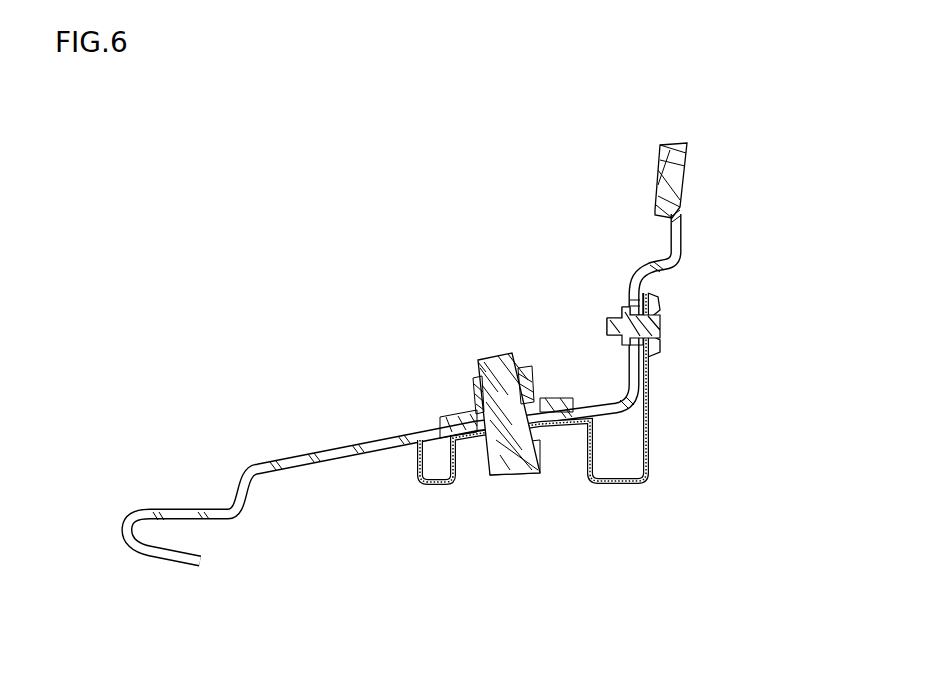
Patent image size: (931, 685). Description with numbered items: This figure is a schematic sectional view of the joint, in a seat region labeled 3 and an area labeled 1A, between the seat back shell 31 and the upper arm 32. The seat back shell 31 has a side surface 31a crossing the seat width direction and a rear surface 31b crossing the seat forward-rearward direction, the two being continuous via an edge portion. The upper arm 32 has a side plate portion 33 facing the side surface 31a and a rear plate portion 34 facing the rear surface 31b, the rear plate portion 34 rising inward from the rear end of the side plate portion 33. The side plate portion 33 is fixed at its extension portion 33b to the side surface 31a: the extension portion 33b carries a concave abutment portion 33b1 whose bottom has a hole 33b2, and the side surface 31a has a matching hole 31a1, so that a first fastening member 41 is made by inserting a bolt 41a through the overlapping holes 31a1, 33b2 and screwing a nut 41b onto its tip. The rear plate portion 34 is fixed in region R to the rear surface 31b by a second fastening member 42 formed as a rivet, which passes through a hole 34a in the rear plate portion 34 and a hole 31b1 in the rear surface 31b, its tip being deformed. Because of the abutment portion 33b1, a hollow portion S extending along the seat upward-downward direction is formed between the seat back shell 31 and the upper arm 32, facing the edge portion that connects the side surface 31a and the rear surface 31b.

The bracket assembly 3 is at (146, 148).
The vehicle body portion 1A is at (813, 89).
The seat back shell 31 is at (684, 181).
The side surface 31a is at (352, 470).
The hole 31a1 is at (532, 410).
The rear surface 31b is at (650, 285).
The hole 31b1 is at (618, 318).
The upper arm 32 is at (658, 496).
The side plate portion 33 is at (605, 483).
The extension portion 33b is at (435, 482).
The abutment portion 33b1 is at (464, 480).
The hole 33b2 is at (526, 475).
The rear plate portion 34 is at (649, 443).
The hole 34a is at (656, 338).
The first fastening member 41 is at (513, 282).
The bolt 41a is at (496, 390).
The nut 41b is at (452, 380).
The second fastening member 42 is at (642, 326).
The region R is at (648, 404).
The hollow portion S is at (622, 470).